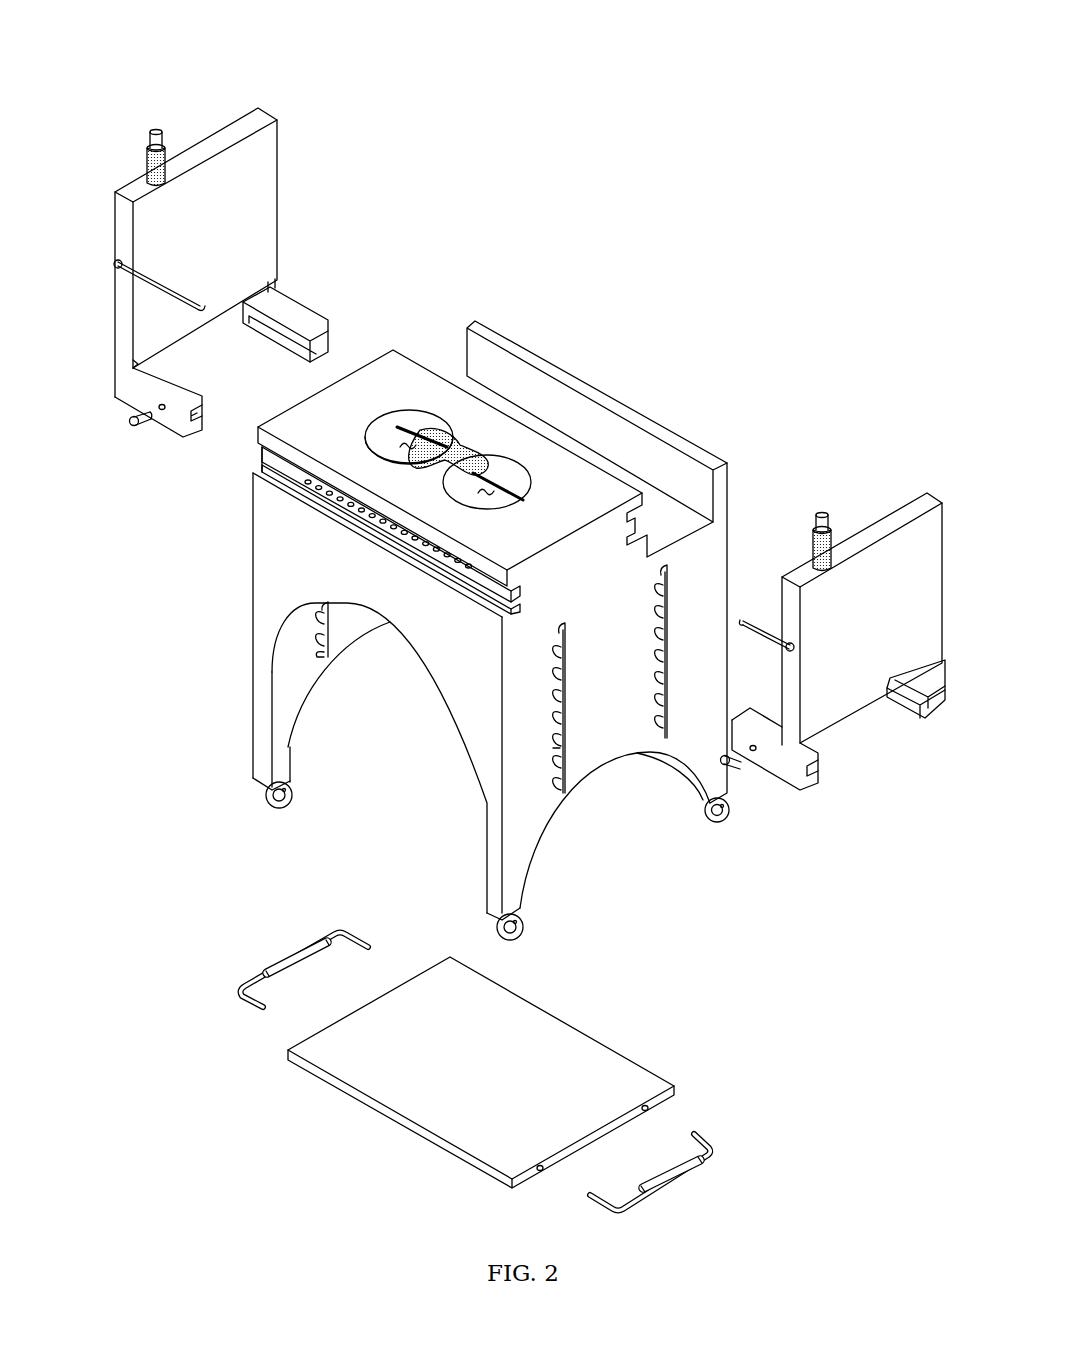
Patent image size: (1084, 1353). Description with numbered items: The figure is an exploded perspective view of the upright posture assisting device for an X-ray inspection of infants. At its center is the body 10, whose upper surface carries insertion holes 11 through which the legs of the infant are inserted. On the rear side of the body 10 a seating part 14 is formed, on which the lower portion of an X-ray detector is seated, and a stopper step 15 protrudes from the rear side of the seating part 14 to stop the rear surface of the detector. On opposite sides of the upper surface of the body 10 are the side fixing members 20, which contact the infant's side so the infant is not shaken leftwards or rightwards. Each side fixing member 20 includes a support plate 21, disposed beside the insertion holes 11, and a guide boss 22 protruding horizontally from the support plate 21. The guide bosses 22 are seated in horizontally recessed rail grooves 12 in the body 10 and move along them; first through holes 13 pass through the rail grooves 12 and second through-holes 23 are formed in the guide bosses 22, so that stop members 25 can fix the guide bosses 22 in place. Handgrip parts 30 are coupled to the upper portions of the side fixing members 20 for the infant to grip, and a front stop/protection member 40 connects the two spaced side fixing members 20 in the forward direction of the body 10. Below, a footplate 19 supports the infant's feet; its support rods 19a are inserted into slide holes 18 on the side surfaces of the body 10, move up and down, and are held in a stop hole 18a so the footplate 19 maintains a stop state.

The body 10 is at (470, 690).
The insertion holes 11 is at (415, 432).
The rail grooves 12 is at (290, 485).
The first through holes 13 is at (337, 498).
The seating part 14 is at (632, 464).
The stopper step 15 is at (470, 328).
The slide hole 18 is at (563, 732).
The stop hole 18a is at (553, 748).
The footplate 19 is at (578, 1055).
The support rod 19a is at (300, 955).
The side fixing members 20 is at (234, 262).
The support plates 21 is at (265, 180).
The guide bosses 22 is at (178, 387).
The second through-holes 23 is at (161, 412).
The stop members 25 is at (129, 420).
The handgrip parts 30 is at (147, 148).
The front stop/protection member 40 is at (163, 280).